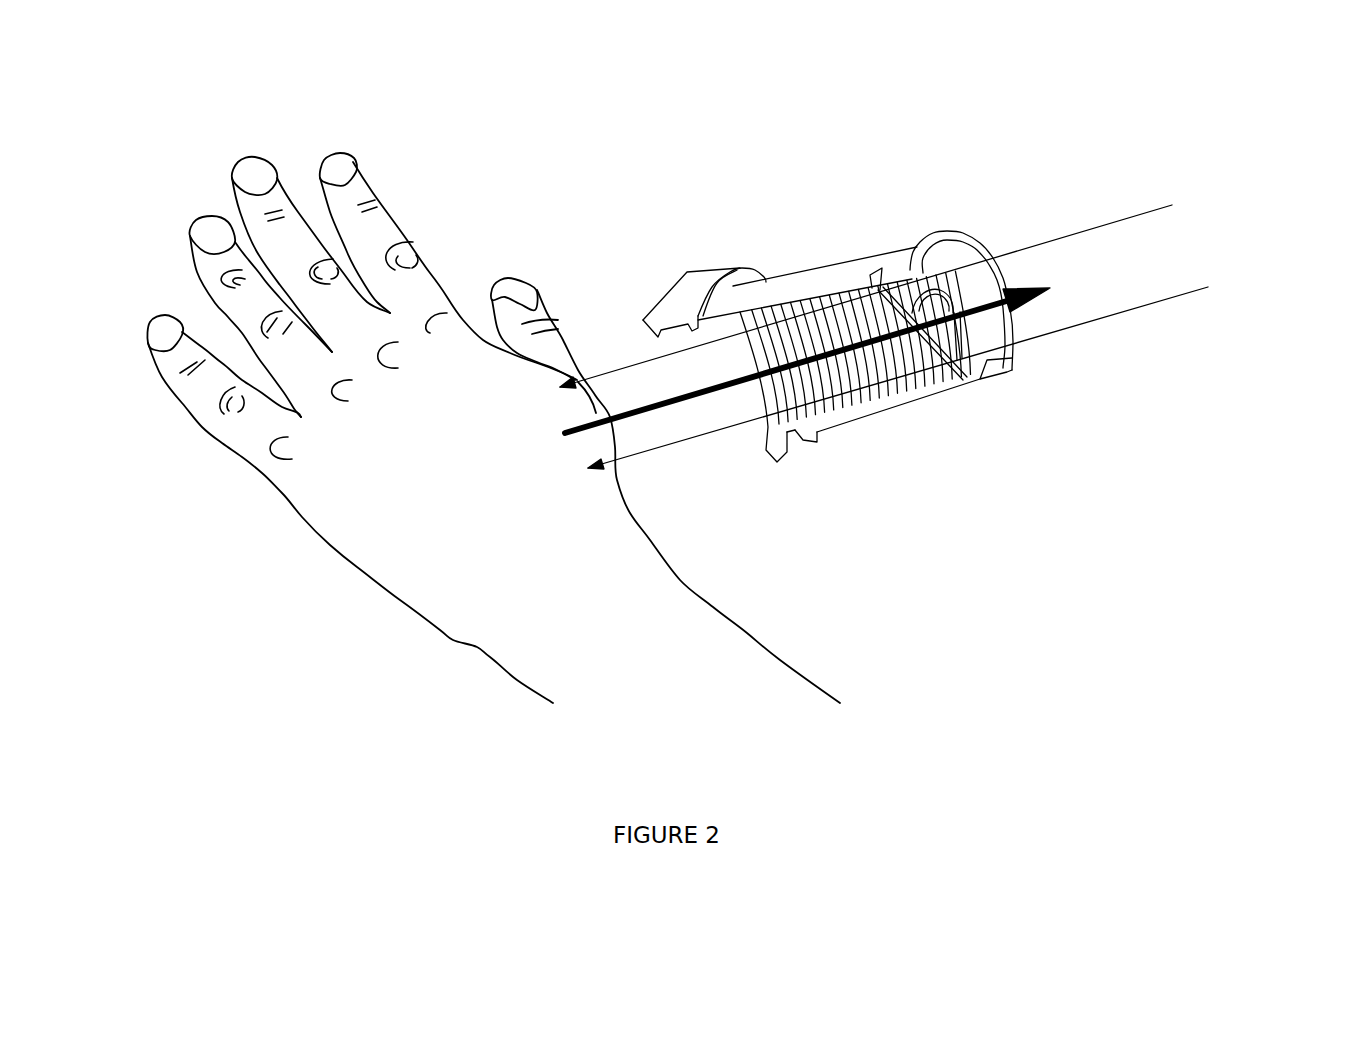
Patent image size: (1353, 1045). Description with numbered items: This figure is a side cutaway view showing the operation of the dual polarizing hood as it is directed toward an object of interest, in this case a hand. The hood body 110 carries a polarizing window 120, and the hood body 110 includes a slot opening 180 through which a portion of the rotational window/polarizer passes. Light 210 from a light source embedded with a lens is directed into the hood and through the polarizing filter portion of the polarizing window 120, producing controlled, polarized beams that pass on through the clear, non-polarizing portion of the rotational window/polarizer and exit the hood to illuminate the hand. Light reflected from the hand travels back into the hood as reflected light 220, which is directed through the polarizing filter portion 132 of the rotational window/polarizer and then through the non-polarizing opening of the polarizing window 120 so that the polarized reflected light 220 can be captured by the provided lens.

The hood body 110 is at (775, 285).
The polarizing window 120 is at (973, 340).
The polarizing filter portion 132 is at (928, 305).
The slot opening 180 is at (880, 268).
The light 210 is at (1210, 282).
The reflected light 220 is at (1056, 289).